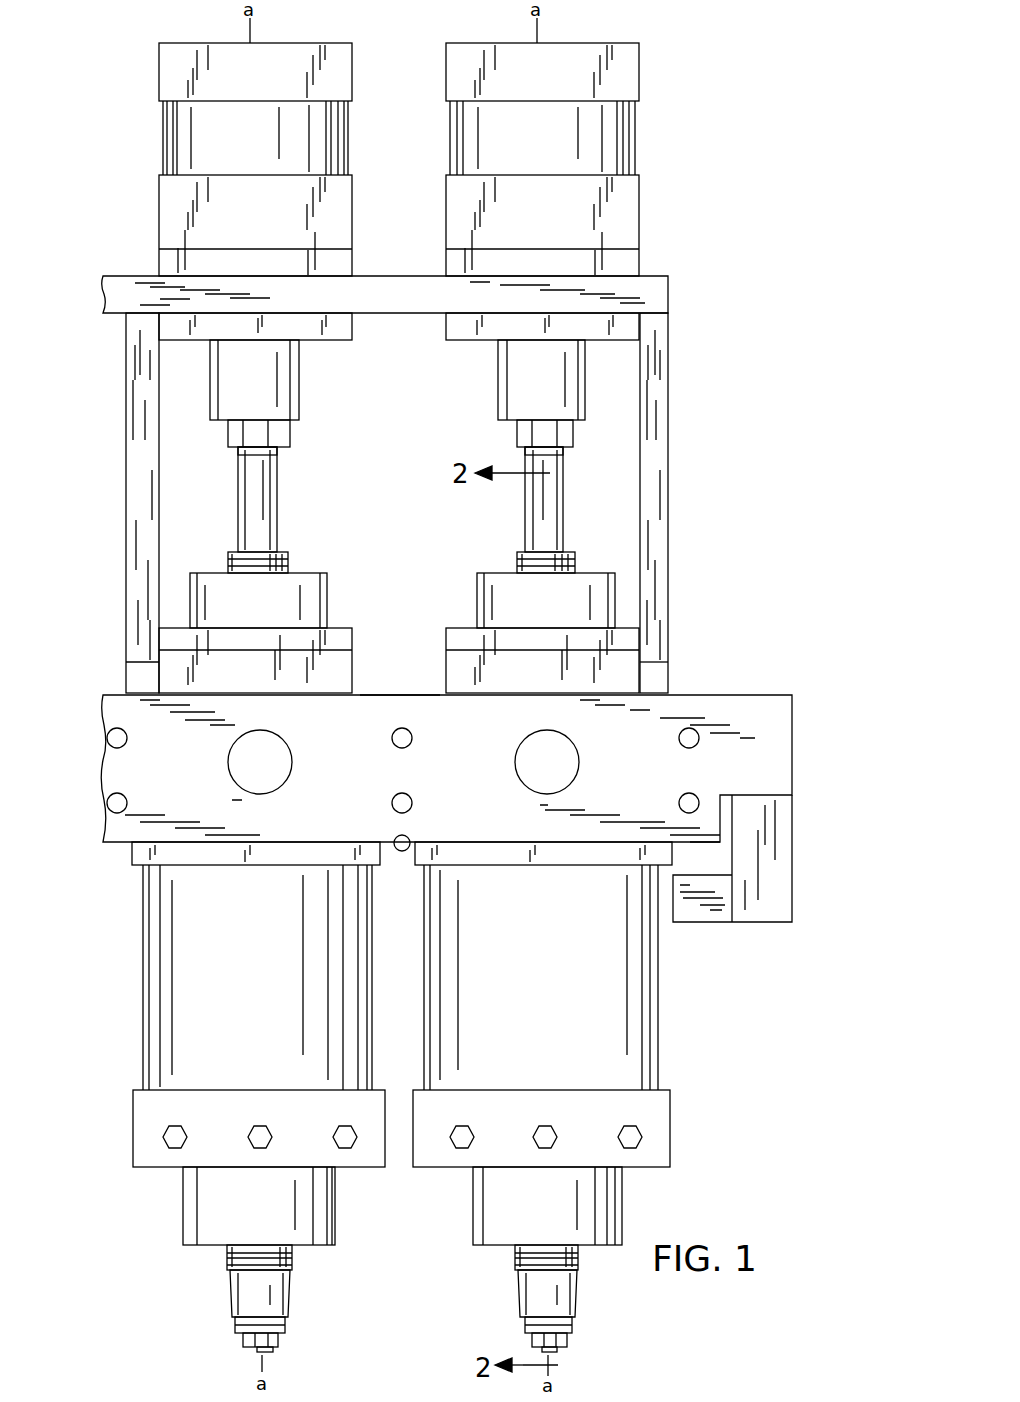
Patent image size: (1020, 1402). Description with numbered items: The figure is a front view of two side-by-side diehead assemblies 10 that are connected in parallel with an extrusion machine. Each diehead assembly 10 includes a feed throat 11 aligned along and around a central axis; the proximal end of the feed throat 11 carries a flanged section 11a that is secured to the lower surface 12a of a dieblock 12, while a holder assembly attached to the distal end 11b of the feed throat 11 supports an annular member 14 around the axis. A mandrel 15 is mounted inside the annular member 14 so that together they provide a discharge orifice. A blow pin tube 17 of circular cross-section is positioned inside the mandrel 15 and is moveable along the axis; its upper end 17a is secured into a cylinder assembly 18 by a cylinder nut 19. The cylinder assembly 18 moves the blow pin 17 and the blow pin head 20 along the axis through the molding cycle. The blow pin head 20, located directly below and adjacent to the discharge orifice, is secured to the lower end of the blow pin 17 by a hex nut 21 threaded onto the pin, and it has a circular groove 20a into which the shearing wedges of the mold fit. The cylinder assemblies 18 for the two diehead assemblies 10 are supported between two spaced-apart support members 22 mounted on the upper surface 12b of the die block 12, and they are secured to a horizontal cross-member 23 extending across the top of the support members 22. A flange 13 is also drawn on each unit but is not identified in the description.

The diehead assembly 10 is at (655, 171).
The feed throat 11 is at (422, 1013).
The flanged section 11a is at (420, 866).
The distal end 11b is at (422, 1083).
The dieblock 12 is at (350, 785).
The lower surface 12a is at (408, 838).
The upper surface 12b is at (393, 695).
The flange 13 is at (357, 1170).
The annular member 14 is at (335, 1222).
The mandrel 15 is at (290, 558).
The blow pin tube 17 is at (277, 512).
The upper end 17a is at (277, 449).
The cylinder assembly 18 is at (144, 182).
The cylinder nut 19 is at (290, 435).
The blow pin head 20 is at (235, 1305).
The circular groove 20a is at (235, 1262).
The hex nut 21 is at (280, 1339).
The support member 22 is at (668, 445).
The horizontal cross-member 23 is at (668, 284).